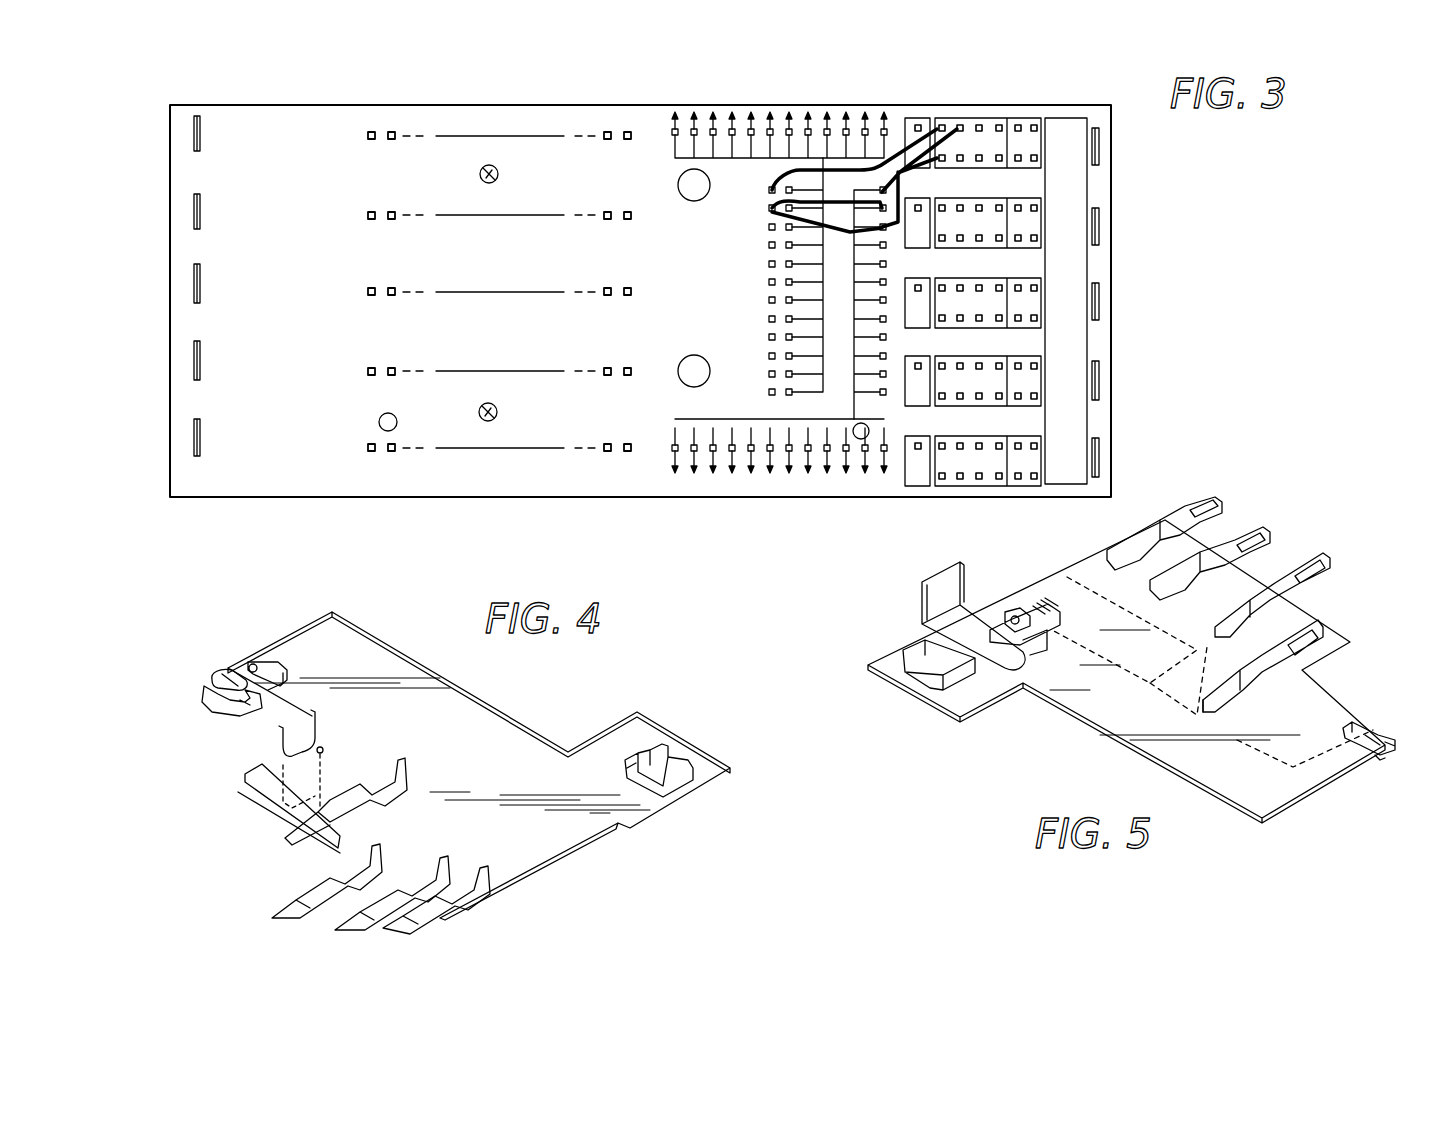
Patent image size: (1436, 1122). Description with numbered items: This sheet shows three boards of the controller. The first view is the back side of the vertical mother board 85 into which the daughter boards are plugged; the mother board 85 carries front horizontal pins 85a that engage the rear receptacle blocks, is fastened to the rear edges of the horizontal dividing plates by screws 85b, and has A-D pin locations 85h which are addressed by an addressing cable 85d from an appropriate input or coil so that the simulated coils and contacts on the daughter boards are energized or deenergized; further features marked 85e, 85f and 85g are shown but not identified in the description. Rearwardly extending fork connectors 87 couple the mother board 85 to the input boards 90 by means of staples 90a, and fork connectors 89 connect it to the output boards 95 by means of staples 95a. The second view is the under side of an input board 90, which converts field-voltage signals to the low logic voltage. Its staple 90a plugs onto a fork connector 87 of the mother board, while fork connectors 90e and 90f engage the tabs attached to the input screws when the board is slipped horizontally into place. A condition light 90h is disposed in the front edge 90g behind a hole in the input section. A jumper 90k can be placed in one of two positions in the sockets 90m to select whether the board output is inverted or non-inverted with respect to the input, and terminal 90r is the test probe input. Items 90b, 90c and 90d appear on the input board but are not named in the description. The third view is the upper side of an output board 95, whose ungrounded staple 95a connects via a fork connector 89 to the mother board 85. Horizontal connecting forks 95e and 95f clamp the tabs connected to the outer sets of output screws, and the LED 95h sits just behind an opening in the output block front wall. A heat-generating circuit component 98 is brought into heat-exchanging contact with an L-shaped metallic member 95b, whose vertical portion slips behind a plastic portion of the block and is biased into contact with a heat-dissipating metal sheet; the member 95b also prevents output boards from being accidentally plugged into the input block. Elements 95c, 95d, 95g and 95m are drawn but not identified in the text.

In FIG. 3, the mother board 85 is at (413, 105).
In FIG. 3, the front horizontal pins 85a is at (368, 136).
In FIG. 3, the screws 85b is at (498, 176).
In FIG. 3, the addressing cable 85d is at (899, 148).
In FIG. 3, the numbered terminal pairs 85e is at (770, 337).
In FIG. 3, the upper connector bus 85f is at (733, 158).
In FIG. 3, the lower transfer connector bus 85g is at (709, 419).
In FIG. 3, the A-D pin locations 85h is at (963, 212).
In FIG. 3, the fork connectors 87 is at (1099, 150).
In FIG. 3, the fork connectors 89 is at (200, 150).
In FIG. 4, the input board 90 is at (521, 780).
In FIG. 4, the staples 90a is at (683, 788).
In FIG. 4, the bracket 90b is at (268, 706).
In FIG. 4, the contact spring 90c is at (386, 922).
In FIG. 4, the contact spring 90d is at (335, 904).
In FIG. 4, the fork connector 90e is at (292, 882).
In FIG. 4, the fork connector 90f is at (400, 760).
In FIG. 4, the front edge 90g is at (285, 648).
In FIG. 4, the condition lights 90h is at (220, 670).
In FIG. 4, the jumper 90k is at (245, 776).
In FIG. 4, the sockets 90m is at (338, 738).
In FIG. 4, the terminal 90r is at (283, 673).
In FIG. 5, the output board 95 is at (1141, 685).
In FIG. 5, the staple 95a is at (922, 678).
In FIG. 5, the L-shaped metallic member 95b is at (953, 578).
In FIG. 5, the contact member 95c is at (1200, 505).
In FIG. 5, the contact member 95d is at (1245, 528).
In FIG. 5, the horizontal connecting fork 95e is at (1330, 556).
In FIG. 5, the horizontal connecting fork 95f is at (1322, 614).
In FIG. 5, the clip 95g is at (1385, 735).
In FIG. 5, the condition light 95h is at (1385, 755).
In FIG. 5, the contact leg 95m is at (1207, 717).
In FIG. 5, the circuit component 98 is at (1062, 632).